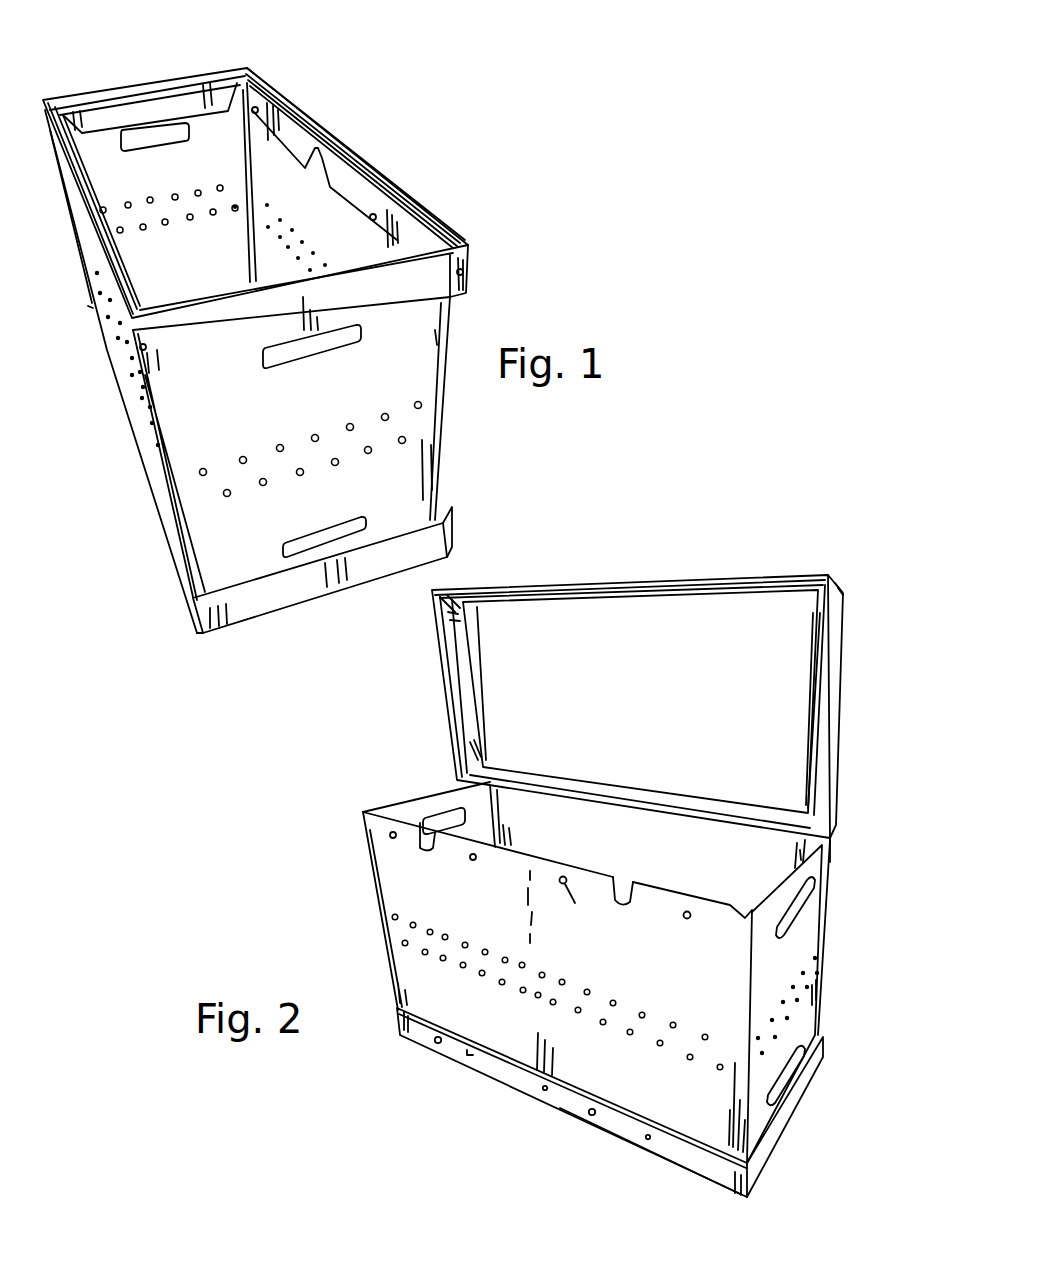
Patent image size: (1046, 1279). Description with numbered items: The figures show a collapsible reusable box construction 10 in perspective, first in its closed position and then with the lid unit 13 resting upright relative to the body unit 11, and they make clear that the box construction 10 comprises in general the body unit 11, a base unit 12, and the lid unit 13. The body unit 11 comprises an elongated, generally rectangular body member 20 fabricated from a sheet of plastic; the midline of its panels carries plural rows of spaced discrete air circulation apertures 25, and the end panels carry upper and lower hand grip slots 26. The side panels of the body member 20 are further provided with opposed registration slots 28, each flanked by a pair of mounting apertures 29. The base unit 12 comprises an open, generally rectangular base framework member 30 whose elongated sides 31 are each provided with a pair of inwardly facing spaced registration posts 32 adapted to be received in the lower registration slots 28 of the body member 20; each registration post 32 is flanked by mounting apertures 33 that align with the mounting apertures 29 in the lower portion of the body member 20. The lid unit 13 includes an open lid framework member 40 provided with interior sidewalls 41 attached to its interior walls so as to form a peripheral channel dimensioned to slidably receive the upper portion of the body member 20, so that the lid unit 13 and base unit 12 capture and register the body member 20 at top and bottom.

In FIG. 1, the box construction 10 is at (403, 97).
In FIG. 1, the body unit 11 is at (410, 377).
In FIG. 1, the base unit 12 is at (260, 603).
In FIG. 1, the lid unit 13 is at (173, 83).
In FIG. 1, the body member 20 is at (163, 458).
In FIG. 2, the body member 20 is at (403, 885).
In FIG. 2, the air circulation apertures 25 is at (817, 973).
In FIG. 2, the hand grip slots 26 is at (798, 907).
In FIG. 2, the registration slots 28 is at (617, 880).
In FIG. 2, the mounting apertures 29 is at (685, 917).
In FIG. 1, the base framework member 30 is at (443, 530).
In FIG. 2, the base framework member 30 is at (782, 1120).
In FIG. 2, the elongated sides 31 is at (722, 1170).
In FIG. 2, the registration posts 32 is at (587, 1117).
In FIG. 2, the mounting apertures 33 is at (647, 1138).
In FIG. 1, the lid framework member 40 is at (458, 232).
In FIG. 2, the lid framework member 40 is at (830, 703).
In FIG. 1, the interior sidewalls 41 is at (358, 200).
In FIG. 2, the interior sidewalls 41 is at (468, 695).